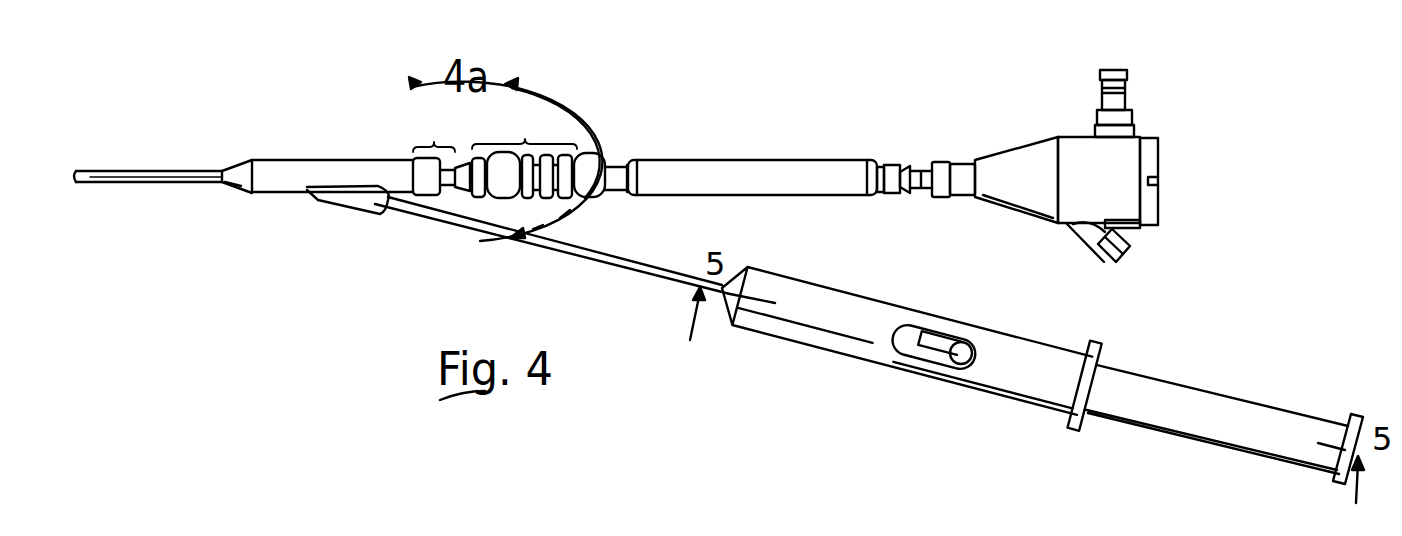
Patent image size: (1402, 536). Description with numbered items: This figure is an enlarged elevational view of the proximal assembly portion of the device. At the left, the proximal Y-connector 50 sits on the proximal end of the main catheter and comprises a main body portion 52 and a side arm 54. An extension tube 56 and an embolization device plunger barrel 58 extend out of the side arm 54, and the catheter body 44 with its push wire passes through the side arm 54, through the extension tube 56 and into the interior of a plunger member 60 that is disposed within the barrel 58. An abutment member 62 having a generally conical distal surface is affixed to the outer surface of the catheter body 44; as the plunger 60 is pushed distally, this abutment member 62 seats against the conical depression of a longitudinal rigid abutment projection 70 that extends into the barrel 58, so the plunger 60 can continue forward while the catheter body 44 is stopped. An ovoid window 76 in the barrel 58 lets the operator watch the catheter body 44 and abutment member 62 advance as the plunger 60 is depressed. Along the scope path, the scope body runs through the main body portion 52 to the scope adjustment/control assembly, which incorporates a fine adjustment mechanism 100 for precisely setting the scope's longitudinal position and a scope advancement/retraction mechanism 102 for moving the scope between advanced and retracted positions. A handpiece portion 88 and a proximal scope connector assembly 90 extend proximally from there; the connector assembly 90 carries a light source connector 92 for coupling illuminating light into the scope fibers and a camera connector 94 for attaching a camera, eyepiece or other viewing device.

The catheter body 44 is at (975, 330).
The proximal Y-connector 50 is at (273, 177).
The main body portion 52 is at (353, 172).
The side arm 54 is at (353, 207).
The extension tube 56 is at (630, 268).
The embolization device plunger barrel 58 is at (823, 302).
The plunger member 60 is at (1288, 430).
The abutment member 62 is at (976, 360).
The abutment projection 70 is at (913, 333).
The ovoid window 76 is at (945, 357).
The handpiece portion 88 is at (798, 177).
The proximal scope connector assembly 90 is at (1025, 170).
The light source connector 92 is at (1118, 100).
The camera connector 94 is at (1163, 178).
The fine adjustment mechanism 100 is at (441, 152).
The scope advancement/retraction mechanism 102 is at (538, 151).